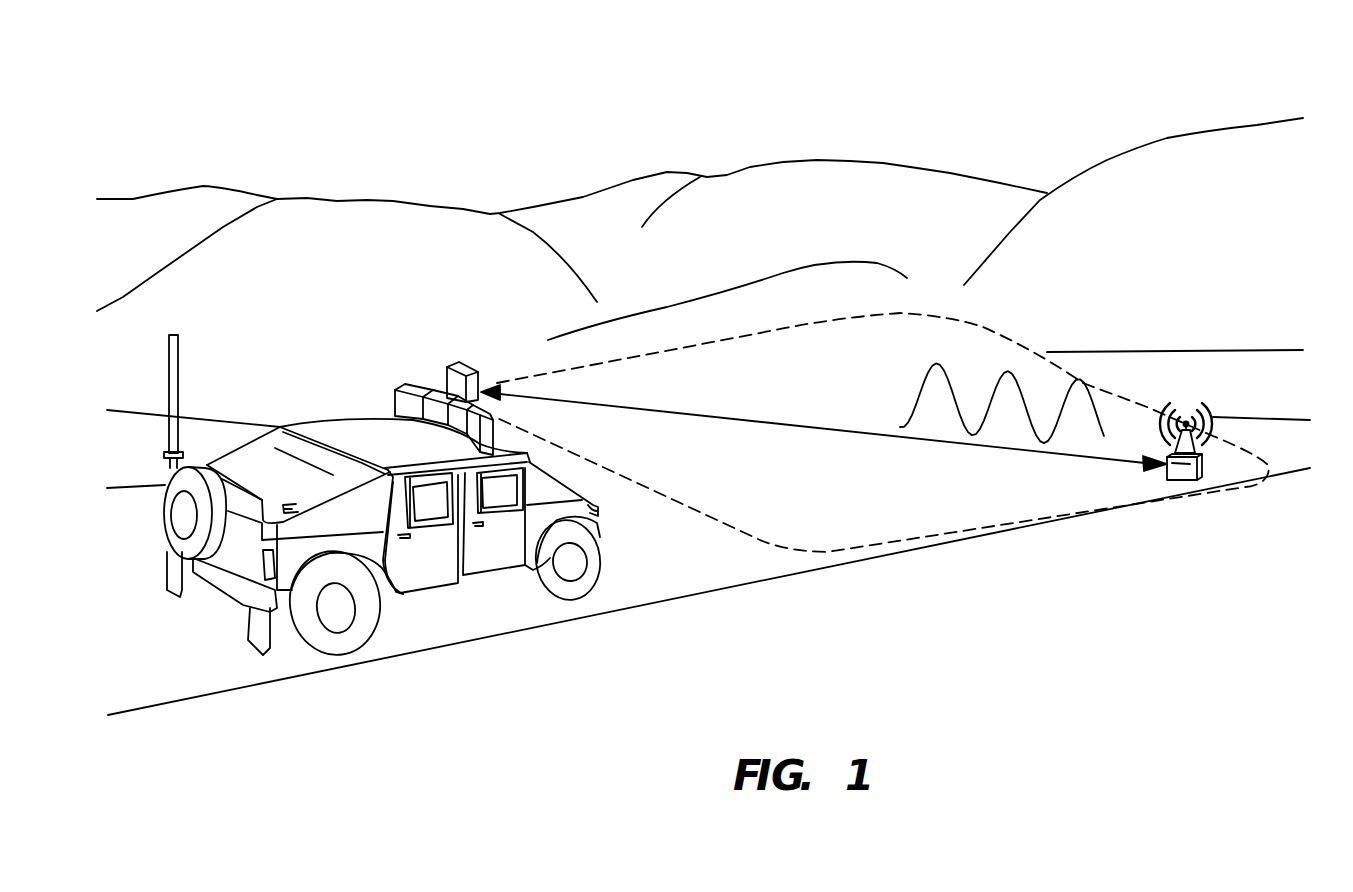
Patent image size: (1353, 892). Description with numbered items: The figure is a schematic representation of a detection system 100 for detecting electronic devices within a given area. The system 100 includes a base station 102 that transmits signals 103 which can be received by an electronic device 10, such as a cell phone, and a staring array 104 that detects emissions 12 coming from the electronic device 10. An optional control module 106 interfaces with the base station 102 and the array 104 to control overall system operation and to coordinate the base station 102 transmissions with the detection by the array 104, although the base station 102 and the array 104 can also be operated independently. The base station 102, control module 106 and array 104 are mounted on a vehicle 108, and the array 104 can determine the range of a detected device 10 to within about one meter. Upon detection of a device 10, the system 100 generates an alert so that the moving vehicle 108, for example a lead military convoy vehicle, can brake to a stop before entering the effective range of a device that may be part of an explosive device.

The detection system 100 is at (503, 174).
The base station 102 is at (465, 362).
The signals 103 is at (942, 358).
The staring array 104 is at (410, 387).
The control module 106 is at (450, 393).
The vehicle 108 is at (405, 454).
The electronic device 10 is at (1187, 400).
The emissions 12 is at (1213, 413).